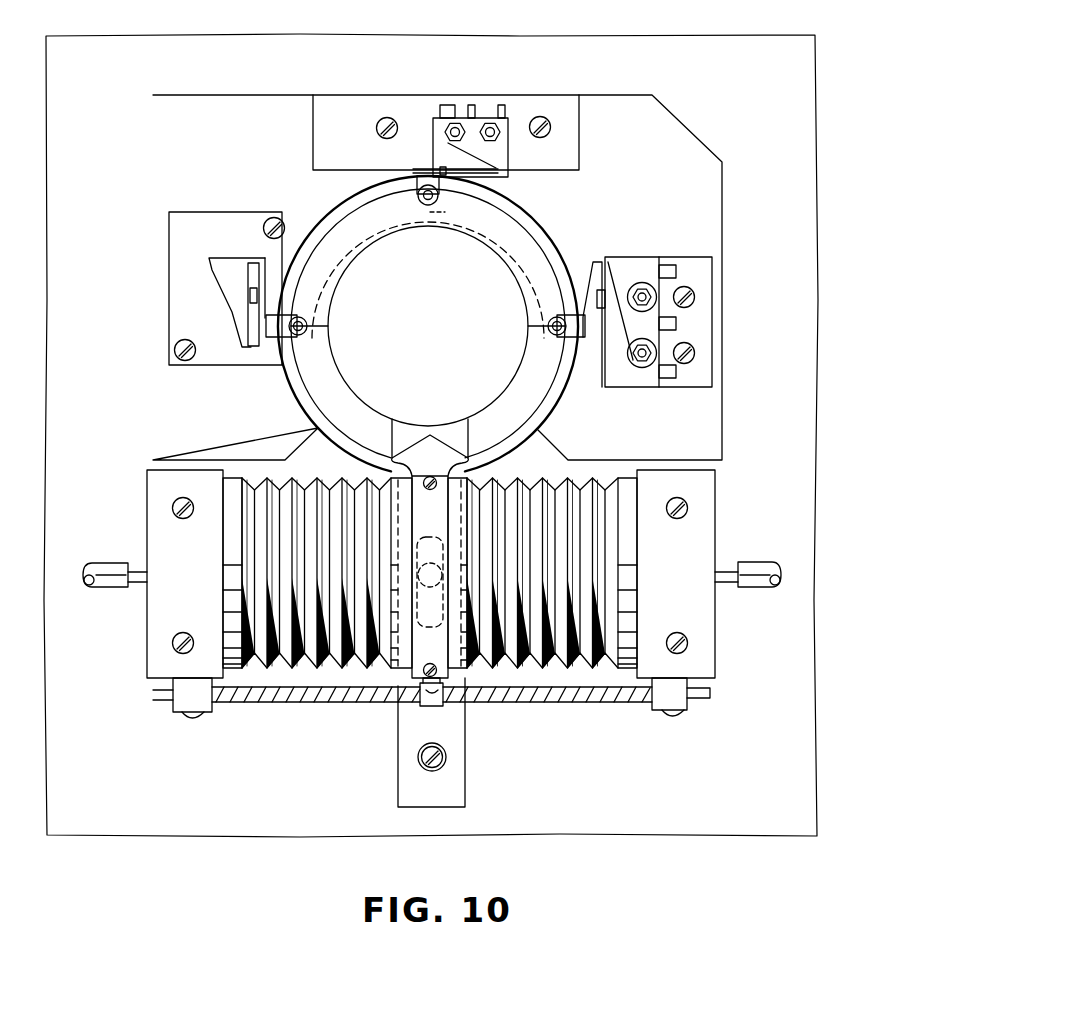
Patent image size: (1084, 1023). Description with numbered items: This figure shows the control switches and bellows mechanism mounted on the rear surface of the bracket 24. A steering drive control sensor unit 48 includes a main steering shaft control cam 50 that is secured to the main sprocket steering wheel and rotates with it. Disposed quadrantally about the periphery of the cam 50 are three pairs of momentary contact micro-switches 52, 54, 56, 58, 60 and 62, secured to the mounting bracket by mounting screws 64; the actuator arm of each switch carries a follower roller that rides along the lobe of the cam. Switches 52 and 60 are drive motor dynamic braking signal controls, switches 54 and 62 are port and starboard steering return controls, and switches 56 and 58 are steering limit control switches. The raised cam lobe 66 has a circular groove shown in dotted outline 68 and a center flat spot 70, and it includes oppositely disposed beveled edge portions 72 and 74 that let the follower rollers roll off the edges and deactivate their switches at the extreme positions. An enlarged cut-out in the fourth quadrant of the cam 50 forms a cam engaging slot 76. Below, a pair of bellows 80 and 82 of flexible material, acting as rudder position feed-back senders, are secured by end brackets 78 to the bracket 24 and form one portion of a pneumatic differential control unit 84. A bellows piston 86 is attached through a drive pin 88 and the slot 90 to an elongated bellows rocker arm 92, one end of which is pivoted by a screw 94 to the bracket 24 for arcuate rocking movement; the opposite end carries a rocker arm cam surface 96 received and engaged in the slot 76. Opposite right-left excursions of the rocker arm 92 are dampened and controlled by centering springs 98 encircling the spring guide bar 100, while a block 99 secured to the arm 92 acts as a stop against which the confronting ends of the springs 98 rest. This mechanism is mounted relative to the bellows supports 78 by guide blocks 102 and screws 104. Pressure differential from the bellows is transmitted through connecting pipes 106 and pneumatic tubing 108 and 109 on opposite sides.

The bracket 24 is at (196, 36).
The steering drive control sensor unit 48 is at (632, 188).
The main steering shaft control cam 50 is at (522, 234).
The micro-switch 52 is at (225, 288).
The micro-switch 54 is at (230, 268).
The micro-switch 56 is at (416, 192).
The micro-switch 58 is at (427, 166).
The micro-switch 60 is at (647, 304).
The micro-switch 62 is at (632, 264).
The mounting screws 64 is at (387, 116).
The raised cam lobe 66 is at (340, 272).
The circular groove 68 is at (380, 222).
The center flat spot 70 is at (440, 214).
The beveled edge portion 72 is at (318, 338).
The beveled edge portion 74 is at (542, 338).
The cam engaging slot 76 is at (407, 432).
The end brackets 78 is at (146, 488).
The bellows 80 is at (360, 490).
The bellows 82 is at (498, 492).
The pneumatic differential control unit 84 is at (124, 674).
The bellows piston 86 is at (411, 674).
The drive pin 88 is at (428, 538).
The slot 90 is at (431, 577).
The bellows rocker arm 92 is at (396, 792).
The screw 94 is at (418, 760).
The rocker arm cam surface 96 is at (446, 445).
The centering springs 98 is at (320, 703).
The block 99 is at (432, 706).
The spring guide bar 100 is at (712, 694).
The guide blocks 102 is at (176, 716).
The screws 104 is at (666, 714).
The connecting pipes 106 is at (140, 570).
The pneumatic tubing 108 is at (760, 562).
The pneumatic tubing 109 is at (100, 563).